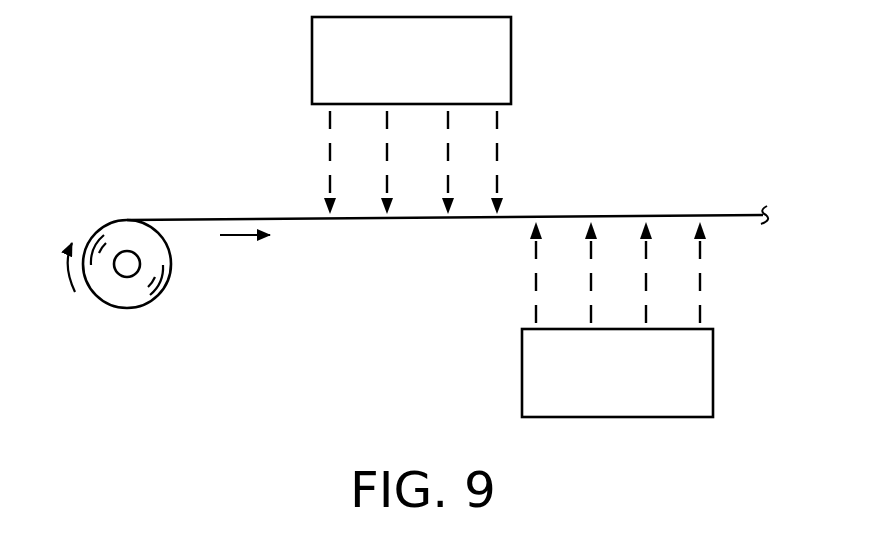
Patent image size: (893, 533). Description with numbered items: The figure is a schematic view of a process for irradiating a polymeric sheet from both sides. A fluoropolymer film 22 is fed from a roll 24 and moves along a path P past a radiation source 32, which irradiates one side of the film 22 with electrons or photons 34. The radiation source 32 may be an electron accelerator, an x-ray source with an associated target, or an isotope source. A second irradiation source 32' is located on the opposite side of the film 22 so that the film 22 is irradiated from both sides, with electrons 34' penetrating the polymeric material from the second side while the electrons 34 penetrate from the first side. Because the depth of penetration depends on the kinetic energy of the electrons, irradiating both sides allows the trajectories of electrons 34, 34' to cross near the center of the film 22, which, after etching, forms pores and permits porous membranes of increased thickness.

The fluoropolymer film 22 is at (208, 220).
The roll 24 is at (138, 292).
The radiation source 32 is at (451, 52).
The electrons or photons 34 is at (454, 159).
The second irradiation source 32' is at (669, 373).
The electrons 34' is at (675, 272).
The path P is at (250, 236).